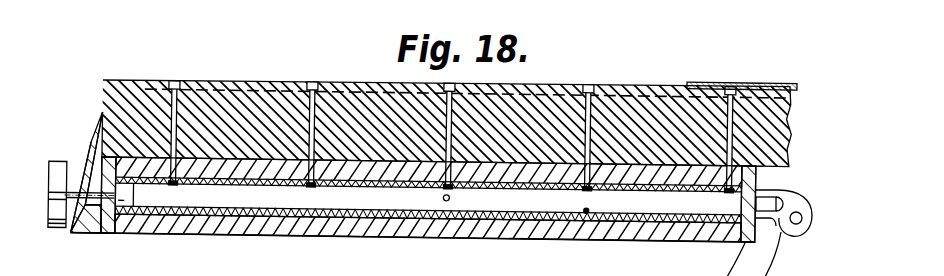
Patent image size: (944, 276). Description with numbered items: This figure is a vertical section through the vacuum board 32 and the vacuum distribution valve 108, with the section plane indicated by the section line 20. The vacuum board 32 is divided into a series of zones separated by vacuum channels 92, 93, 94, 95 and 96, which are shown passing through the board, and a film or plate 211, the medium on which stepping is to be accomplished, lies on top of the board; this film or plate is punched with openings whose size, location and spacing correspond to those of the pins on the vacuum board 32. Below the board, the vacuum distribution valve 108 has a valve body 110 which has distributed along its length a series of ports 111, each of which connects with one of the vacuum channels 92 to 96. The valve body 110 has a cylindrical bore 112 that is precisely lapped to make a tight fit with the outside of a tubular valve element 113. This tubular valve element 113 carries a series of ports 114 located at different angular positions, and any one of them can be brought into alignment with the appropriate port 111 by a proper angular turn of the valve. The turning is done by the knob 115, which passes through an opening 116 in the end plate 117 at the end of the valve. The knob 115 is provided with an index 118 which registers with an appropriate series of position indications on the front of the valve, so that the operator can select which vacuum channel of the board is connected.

The section line 20- 20 is at (193, 32).
The vacuum board 32 is at (106, 79).
The vacuum channel 92 is at (176, 80).
The vacuum channel 93 is at (313, 86).
The vacuum channel 94 is at (450, 85).
The vacuum channel 95 is at (598, 68).
The vacuum channel 96 is at (745, 62).
The film or plate 211 is at (760, 83).
The index 118 is at (92, 142).
The knob 115 is at (58, 167).
The opening 116 is at (93, 234).
The end plate 117 is at (100, 234).
The port 111 is at (182, 172).
The port 114 is at (175, 184).
The tubular valve element 113 is at (364, 221).
The cylindrical bore 112 is at (264, 234).
The valve body 110 is at (600, 241).
The vacuum distribution valve 108 is at (681, 243).